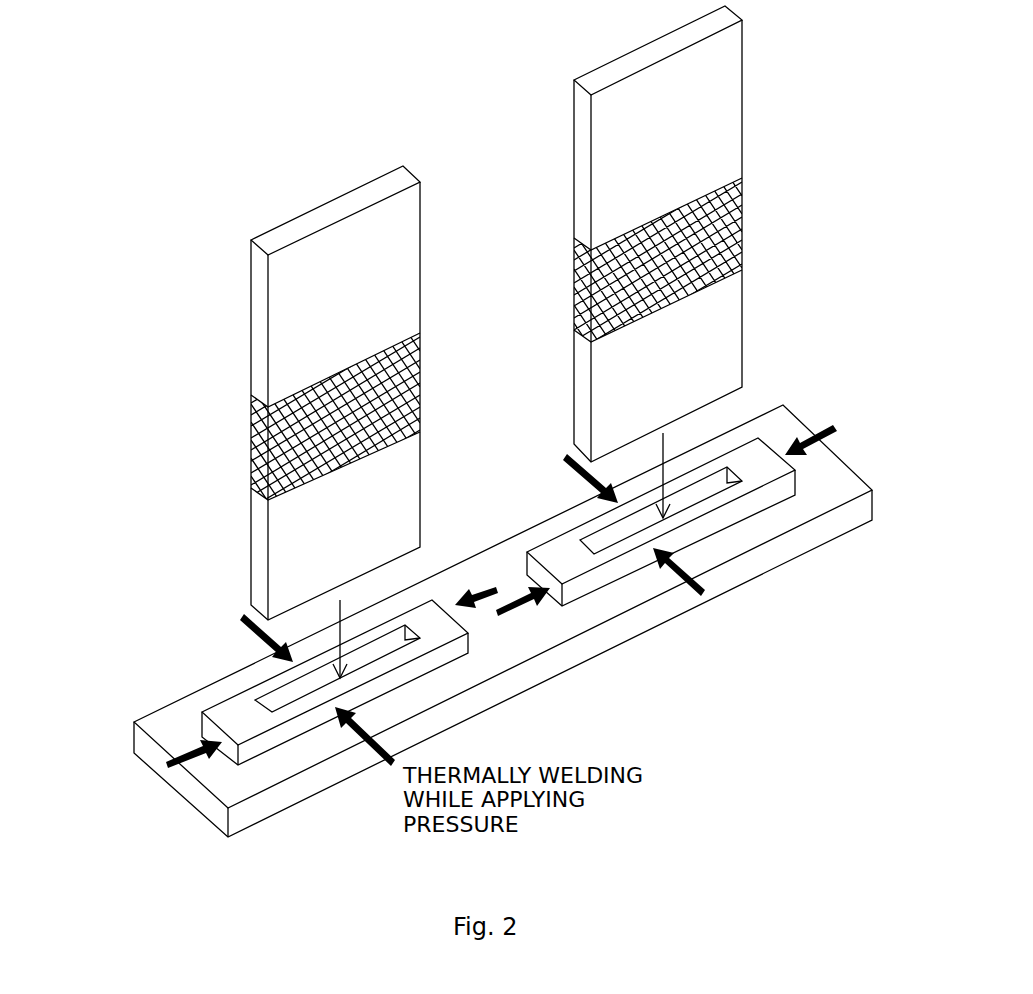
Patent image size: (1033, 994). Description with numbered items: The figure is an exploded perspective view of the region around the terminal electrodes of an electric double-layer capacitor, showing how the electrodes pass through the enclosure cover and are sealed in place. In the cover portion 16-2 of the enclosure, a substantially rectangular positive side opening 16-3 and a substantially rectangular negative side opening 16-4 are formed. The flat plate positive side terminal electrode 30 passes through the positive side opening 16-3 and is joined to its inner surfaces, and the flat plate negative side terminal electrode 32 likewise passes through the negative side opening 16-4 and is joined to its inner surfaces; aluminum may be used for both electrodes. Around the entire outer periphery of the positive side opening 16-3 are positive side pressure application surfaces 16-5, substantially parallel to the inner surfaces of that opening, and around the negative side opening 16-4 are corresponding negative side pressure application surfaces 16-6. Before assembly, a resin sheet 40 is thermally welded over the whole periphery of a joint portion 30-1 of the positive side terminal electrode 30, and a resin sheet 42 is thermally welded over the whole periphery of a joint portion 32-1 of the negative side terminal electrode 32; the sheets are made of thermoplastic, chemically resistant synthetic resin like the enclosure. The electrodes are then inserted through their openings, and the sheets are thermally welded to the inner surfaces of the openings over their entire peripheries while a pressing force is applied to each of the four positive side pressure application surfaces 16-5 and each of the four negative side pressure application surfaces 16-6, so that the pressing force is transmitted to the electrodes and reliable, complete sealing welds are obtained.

The cover portion 16-2 is at (157, 722).
The positive side opening 16-3 is at (298, 685).
The negative side opening 16-4 is at (625, 527).
The positive side pressure application surfaces 16-5 is at (208, 727).
The negative side pressure application surfaces 16-6 is at (528, 563).
The positive side terminal electrode 30 is at (300, 286).
The joint portion 30-1 is at (433, 337).
The sheet 40 is at (292, 433).
The negative side terminal electrode 32 is at (702, 100).
The joint portion 32-1 is at (565, 238).
The sheet 42 is at (742, 240).